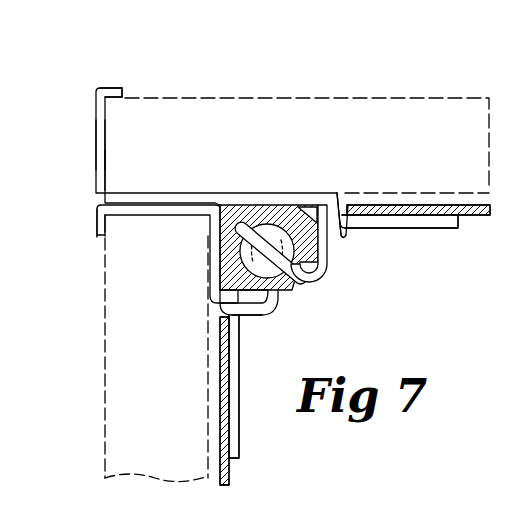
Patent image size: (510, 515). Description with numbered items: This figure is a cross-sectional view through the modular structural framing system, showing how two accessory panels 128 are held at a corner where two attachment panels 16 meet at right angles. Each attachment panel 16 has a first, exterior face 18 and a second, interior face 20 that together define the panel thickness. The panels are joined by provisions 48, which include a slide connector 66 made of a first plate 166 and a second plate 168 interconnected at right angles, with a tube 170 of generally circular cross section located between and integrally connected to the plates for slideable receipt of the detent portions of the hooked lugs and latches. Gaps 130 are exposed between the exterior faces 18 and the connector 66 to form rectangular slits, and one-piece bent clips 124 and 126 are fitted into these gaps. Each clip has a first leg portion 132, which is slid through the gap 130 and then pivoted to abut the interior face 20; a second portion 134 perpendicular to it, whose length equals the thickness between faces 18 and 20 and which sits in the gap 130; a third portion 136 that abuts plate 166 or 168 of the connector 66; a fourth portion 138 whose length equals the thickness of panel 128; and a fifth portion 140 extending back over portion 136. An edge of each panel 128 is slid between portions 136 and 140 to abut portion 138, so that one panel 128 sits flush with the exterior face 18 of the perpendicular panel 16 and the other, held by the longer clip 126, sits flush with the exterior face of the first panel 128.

The attachment panel 16 is at (220, 390).
The first, exterior face 18 is at (220, 427).
The second, interior face 20 is at (233, 475).
The provisions 48 is at (224, 205).
The connector 66 is at (253, 205).
The clip 124 is at (97, 237).
The clip 126 is at (97, 88).
The panel 128 is at (362, 97).
The gap 130 is at (343, 184).
The first leg portion 132 is at (245, 378).
The second portion 134 is at (339, 240).
The third portion 136 is at (141, 192).
The fourth portion 138 is at (96, 141).
The fifth portion 140 is at (113, 88).
The first plate 166 is at (289, 208).
The second plate 168 is at (220, 278).
The tube 170 is at (253, 297).